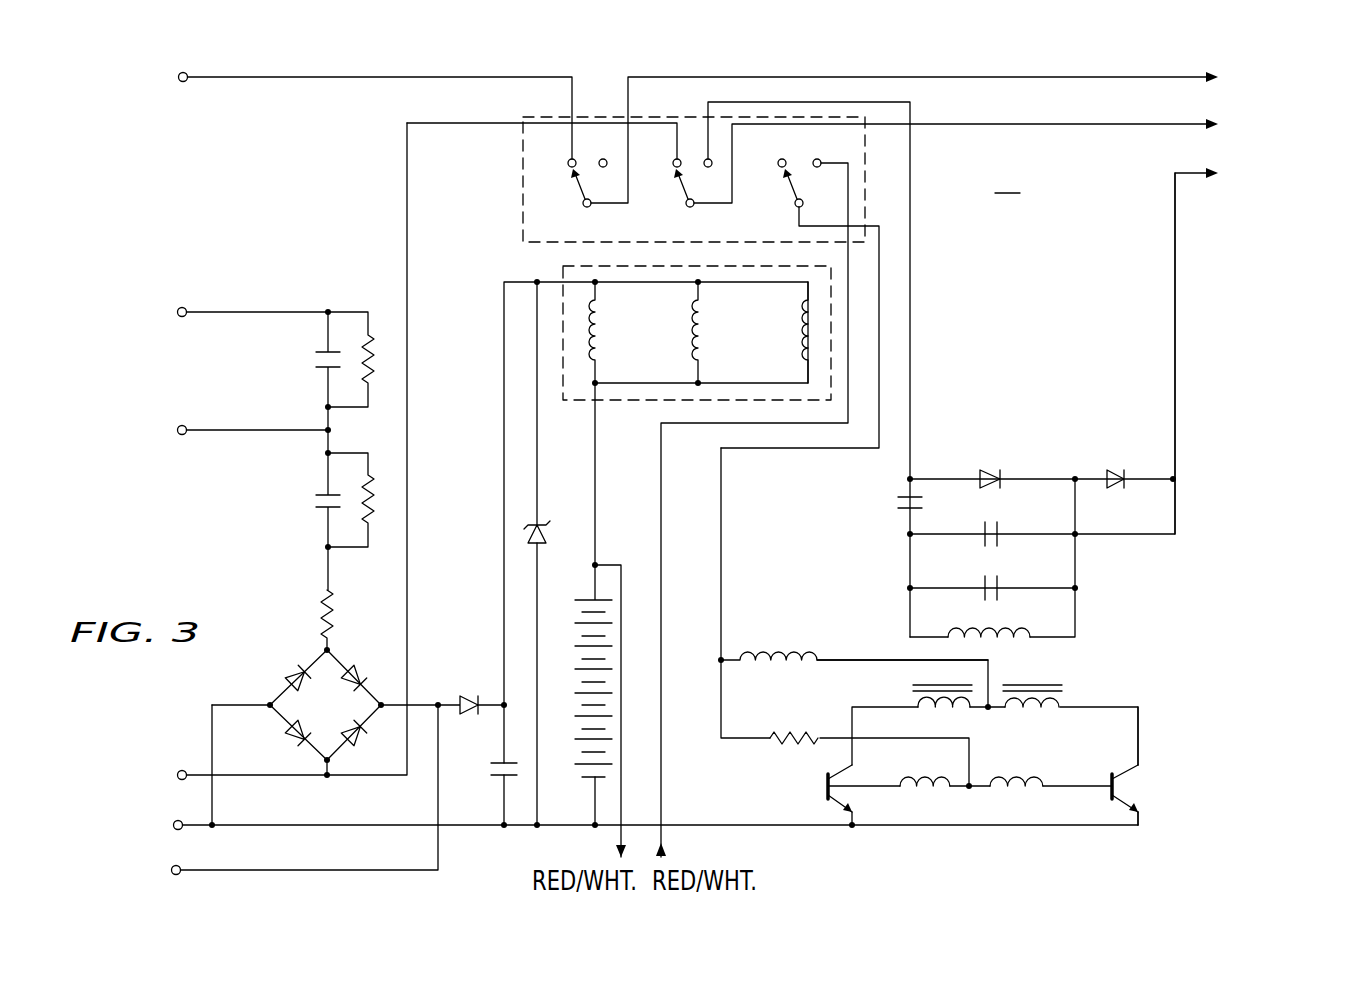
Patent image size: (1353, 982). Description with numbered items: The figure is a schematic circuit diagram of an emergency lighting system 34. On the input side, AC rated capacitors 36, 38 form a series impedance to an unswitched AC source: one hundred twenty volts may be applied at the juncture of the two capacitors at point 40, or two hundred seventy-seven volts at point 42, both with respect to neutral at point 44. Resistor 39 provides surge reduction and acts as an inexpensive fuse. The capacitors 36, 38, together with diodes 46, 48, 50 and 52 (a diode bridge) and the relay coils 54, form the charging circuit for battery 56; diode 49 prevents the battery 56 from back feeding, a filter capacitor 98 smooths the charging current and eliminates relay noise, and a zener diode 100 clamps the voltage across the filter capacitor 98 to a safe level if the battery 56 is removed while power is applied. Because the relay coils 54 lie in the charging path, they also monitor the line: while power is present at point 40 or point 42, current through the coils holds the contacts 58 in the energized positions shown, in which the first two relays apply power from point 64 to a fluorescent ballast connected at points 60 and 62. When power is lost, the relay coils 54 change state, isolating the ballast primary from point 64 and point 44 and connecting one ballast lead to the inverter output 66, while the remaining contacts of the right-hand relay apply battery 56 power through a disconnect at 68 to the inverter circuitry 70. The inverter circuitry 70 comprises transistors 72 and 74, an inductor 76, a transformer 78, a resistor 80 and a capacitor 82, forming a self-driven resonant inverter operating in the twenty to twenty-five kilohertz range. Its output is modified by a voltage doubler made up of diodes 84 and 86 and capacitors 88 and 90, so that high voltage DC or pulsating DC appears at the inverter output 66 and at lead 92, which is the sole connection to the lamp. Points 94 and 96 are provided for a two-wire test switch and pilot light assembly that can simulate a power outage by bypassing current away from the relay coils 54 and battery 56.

The emergency lighting system 34 is at (1008, 178).
The capacitor 36 is at (315, 367).
The capacitor 38 is at (315, 493).
The resistor 39 is at (322, 595).
The juncture of the two capacitors 40 is at (201, 428).
The point 42 is at (207, 310).
The neutral point 44 is at (190, 770).
The diode 46 is at (357, 668).
The diode 48 is at (292, 676).
The diode 49 is at (462, 695).
The diode 50 is at (355, 736).
The diode 52 is at (290, 732).
The relay coils 54 is at (645, 403).
The battery 56 is at (577, 625).
The contacts 58 is at (520, 200).
The point 60 is at (1190, 80).
The point 62 is at (1172, 127).
The point 64 is at (190, 80).
The inverter output 66 is at (910, 226).
The disconnect 68 is at (661, 808).
The inverter circuitry 70 is at (1203, 598).
The transistor 72 is at (826, 782).
The transistor 74 is at (1110, 770).
The inductor 76 is at (778, 658).
The transformer 78 is at (1010, 634).
The resistor 80 is at (800, 735).
The capacitor 82 is at (980, 578).
The diode 84 is at (990, 469).
The diode 86 is at (1113, 469).
The capacitor 88 is at (896, 496).
The capacitor 90 is at (1000, 530).
The lead 92 is at (1175, 204).
The point 94 is at (190, 823).
The point 96 is at (188, 868).
The filter capacitor 98 is at (492, 778).
The zener diode 100 is at (540, 519).